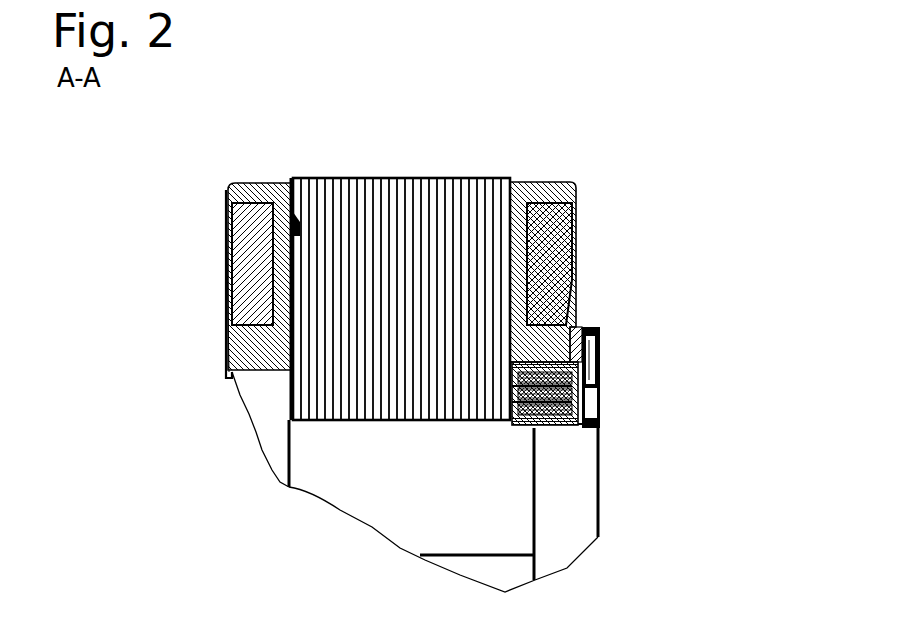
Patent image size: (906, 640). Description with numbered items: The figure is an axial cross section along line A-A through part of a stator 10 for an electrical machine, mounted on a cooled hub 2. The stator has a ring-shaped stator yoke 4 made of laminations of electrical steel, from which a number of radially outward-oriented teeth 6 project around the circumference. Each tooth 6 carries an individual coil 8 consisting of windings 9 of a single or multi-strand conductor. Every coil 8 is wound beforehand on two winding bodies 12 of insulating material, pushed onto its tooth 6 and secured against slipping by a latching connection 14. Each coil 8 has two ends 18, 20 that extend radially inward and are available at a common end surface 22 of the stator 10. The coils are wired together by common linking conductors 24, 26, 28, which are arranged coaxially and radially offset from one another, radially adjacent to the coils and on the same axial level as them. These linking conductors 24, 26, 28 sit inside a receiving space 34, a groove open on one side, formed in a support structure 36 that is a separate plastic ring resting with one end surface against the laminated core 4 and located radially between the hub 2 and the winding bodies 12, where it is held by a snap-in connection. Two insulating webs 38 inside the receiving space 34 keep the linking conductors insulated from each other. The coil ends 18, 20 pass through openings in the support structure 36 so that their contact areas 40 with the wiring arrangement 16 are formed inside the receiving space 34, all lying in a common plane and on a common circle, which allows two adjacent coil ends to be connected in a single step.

The cooled hub 2 is at (372, 527).
The stator yoke 4 is at (310, 125).
The tooth 6 is at (467, 178).
The coil 8 is at (172, 272).
The windings 9 is at (236, 215).
The stator 10 is at (240, 500).
The winding body 12 is at (258, 183).
The latching connection 14 is at (312, 203).
The wiring arrangement 16 is at (585, 447).
The coil end 18 is at (600, 348).
The coil end 20 is at (576, 344).
The end surface 22 is at (622, 550).
The linking conductor 24 is at (512, 378).
The linking conductor 26 is at (527, 370).
The linking conductor 28 is at (522, 428).
The receiving space 34 is at (600, 400).
The support structure 36 is at (618, 298).
The insulating web 38 is at (600, 428).
The contact area 40 is at (600, 362).